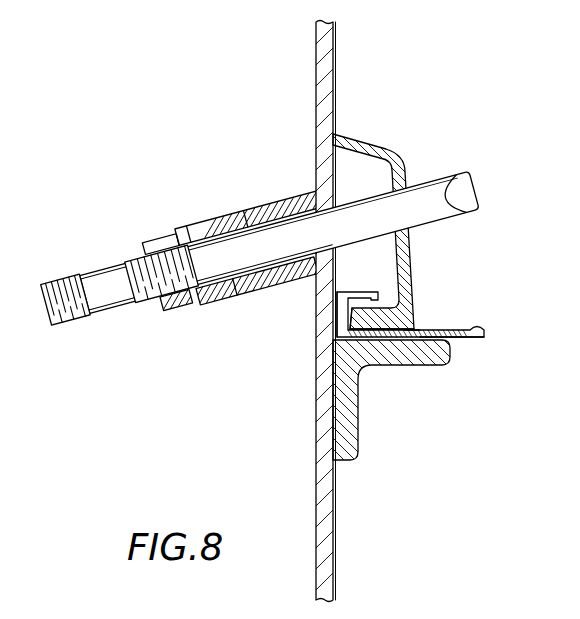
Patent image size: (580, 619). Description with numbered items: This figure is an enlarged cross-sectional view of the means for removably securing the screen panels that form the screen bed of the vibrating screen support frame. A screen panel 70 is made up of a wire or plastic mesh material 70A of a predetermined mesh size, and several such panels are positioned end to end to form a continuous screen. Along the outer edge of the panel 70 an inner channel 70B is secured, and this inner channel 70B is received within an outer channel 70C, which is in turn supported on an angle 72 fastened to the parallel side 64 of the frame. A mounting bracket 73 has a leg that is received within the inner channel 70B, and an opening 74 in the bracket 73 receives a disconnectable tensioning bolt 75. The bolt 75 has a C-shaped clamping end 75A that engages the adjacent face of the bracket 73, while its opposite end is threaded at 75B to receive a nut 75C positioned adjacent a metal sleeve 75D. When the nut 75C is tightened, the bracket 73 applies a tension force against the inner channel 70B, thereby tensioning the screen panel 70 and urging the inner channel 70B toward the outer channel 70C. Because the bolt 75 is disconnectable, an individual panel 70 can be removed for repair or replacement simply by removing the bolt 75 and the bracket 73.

The side 64 is at (320, 65).
The screen panel 70 is at (480, 328).
The mesh material 70A is at (464, 342).
The inner channel 70B is at (413, 330).
The outer channel 70C is at (376, 343).
The angle 72 is at (424, 354).
The mounting bracket 73 is at (413, 307).
The opening 74 is at (408, 278).
The tensioning bolt 75 is at (370, 203).
The C-shaped clamping end 75A is at (427, 187).
The threaded end 75B is at (140, 298).
The nut 75C is at (173, 305).
The metal sleeve 75D is at (235, 295).